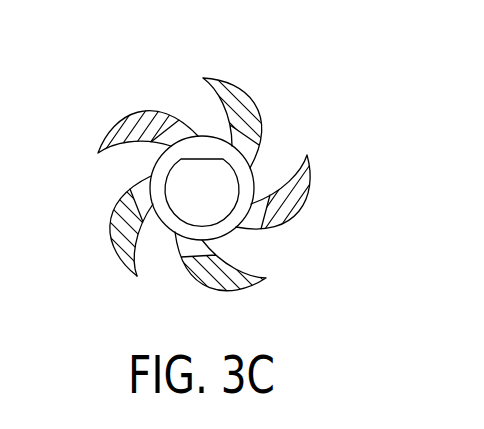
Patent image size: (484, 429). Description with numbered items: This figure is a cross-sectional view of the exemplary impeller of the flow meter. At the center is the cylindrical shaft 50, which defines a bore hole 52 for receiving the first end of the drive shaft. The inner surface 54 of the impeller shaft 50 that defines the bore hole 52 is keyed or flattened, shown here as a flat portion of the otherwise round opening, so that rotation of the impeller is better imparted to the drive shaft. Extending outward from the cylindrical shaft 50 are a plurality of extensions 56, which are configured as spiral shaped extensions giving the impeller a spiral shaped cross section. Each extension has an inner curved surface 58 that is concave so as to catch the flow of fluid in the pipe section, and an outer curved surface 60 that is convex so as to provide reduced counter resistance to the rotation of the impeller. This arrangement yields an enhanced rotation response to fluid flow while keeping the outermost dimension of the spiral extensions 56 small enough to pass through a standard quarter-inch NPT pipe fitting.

The cylindrical shaft 50 is at (262, 170).
The bore hole 52 is at (188, 181).
The inner surface 54 is at (205, 158).
The extensions 56 is at (123, 113).
The inner curved surface 58 is at (136, 239).
The outer curved surface 60 is at (106, 226).